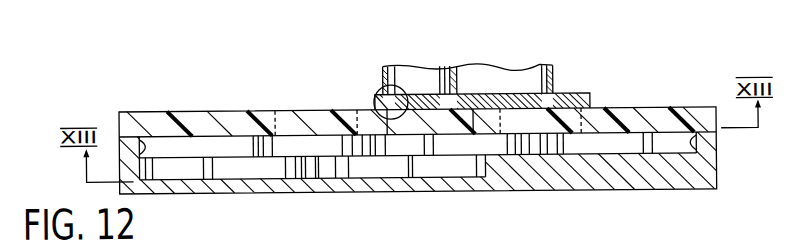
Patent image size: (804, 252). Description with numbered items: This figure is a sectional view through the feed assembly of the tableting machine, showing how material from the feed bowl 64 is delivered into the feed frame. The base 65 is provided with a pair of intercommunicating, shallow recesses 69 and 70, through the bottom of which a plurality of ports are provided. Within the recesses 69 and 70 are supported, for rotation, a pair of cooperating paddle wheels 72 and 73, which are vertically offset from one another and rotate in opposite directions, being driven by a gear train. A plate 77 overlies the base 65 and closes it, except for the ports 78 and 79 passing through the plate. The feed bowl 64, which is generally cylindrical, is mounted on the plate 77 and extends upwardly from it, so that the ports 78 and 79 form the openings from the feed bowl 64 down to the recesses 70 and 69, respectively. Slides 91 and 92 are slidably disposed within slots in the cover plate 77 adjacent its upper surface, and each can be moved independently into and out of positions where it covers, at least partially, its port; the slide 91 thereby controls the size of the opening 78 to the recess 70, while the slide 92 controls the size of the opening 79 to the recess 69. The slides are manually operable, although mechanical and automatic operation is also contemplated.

The feed bowl 64 is at (564, 73).
The base 65 is at (693, 177).
The recess 69 is at (694, 146).
The recess 70 is at (143, 147).
The paddle wheel 72 is at (633, 166).
The paddle wheel 73 is at (193, 147).
The plate 77 is at (658, 122).
The port 78 is at (387, 89).
The port 79 is at (547, 124).
The slide 91 is at (421, 93).
The slide 92 is at (505, 98).